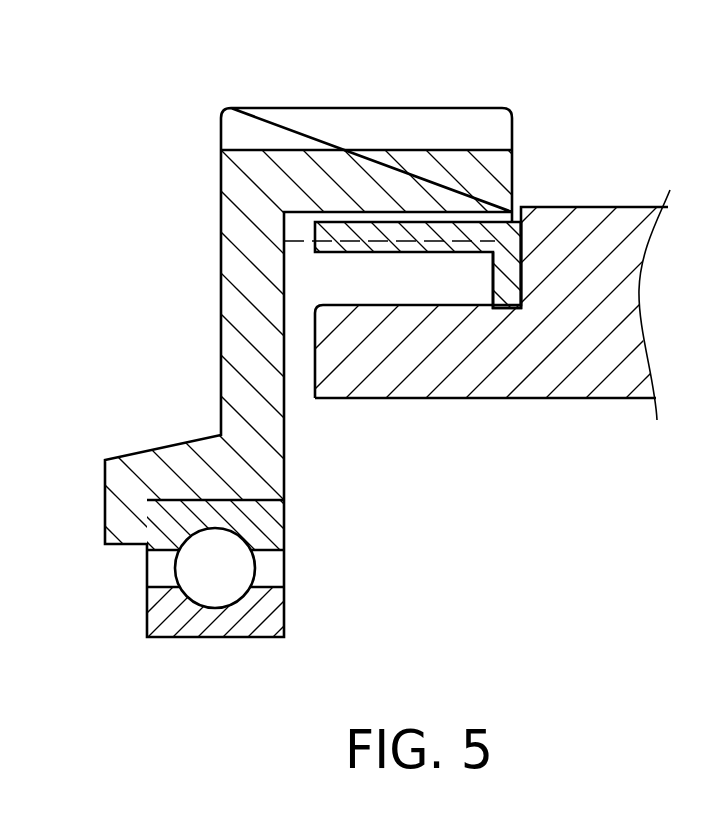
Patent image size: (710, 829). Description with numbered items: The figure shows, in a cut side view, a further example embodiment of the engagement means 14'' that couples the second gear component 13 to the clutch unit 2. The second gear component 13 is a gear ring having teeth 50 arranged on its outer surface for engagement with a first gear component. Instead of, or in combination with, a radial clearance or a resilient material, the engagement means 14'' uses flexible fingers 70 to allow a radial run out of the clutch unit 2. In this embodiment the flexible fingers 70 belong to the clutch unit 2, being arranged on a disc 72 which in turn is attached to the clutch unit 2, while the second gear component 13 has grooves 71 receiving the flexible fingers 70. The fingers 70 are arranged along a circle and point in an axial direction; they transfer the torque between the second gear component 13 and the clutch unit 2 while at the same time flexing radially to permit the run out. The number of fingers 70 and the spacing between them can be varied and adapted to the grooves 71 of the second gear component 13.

The clutch unit 2 is at (548, 334).
The second gear component 13 is at (363, 192).
The engagement means 14'' is at (390, 330).
The teeth 50 is at (250, 137).
The flexible fingers 70 is at (447, 240).
The grooves 71 is at (295, 235).
The disc 72 is at (515, 278).